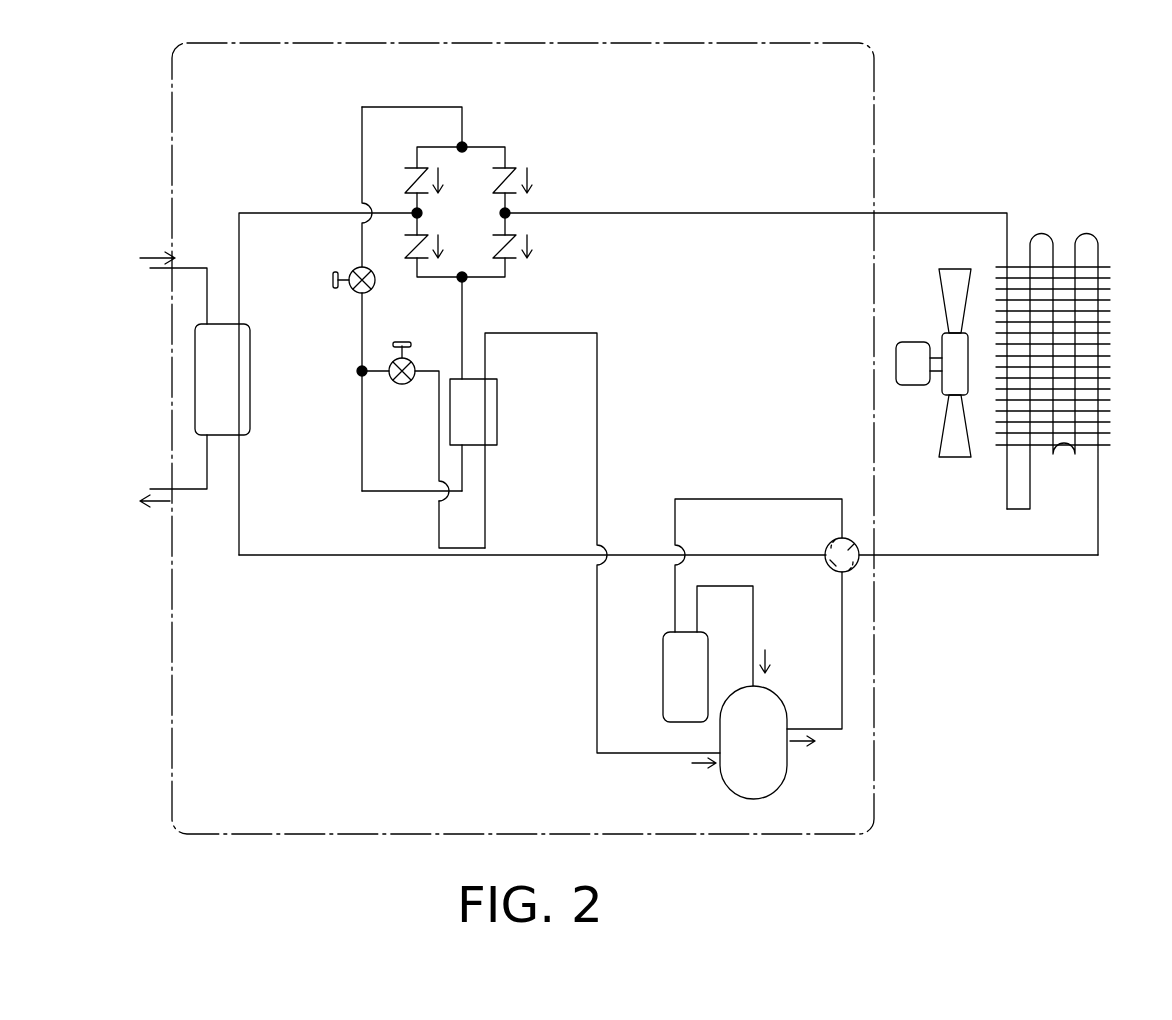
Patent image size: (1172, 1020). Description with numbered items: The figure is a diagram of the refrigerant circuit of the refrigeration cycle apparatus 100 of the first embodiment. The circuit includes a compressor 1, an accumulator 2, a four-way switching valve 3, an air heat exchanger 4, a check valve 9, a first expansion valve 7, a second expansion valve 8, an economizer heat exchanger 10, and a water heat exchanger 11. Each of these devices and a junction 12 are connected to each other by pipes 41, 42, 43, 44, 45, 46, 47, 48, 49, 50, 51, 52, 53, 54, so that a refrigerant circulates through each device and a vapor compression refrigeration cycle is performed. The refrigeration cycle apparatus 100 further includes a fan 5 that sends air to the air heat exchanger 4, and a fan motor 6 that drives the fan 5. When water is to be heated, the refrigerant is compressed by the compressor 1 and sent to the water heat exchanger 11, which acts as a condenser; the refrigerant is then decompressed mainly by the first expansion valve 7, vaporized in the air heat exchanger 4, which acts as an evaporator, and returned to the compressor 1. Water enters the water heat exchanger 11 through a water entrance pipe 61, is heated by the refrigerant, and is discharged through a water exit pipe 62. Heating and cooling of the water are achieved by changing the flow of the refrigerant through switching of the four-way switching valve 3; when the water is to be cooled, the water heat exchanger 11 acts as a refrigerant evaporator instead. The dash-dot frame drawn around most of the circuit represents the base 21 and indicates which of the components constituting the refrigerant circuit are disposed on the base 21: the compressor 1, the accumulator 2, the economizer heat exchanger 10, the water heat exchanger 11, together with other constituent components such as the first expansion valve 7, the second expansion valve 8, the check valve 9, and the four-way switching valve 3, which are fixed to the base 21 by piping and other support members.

The compressor 1 is at (770, 778).
The accumulator 2 is at (673, 673).
The four-way switching valve 3 is at (857, 567).
The air heat exchanger 4 is at (1118, 400).
The fan 5 is at (930, 318).
The fan motor 6 is at (892, 341).
The first expansion valve 7 is at (353, 270).
The second expansion valve 8 is at (413, 362).
The check valve 9 is at (550, 170).
The economizer heat exchanger 10 is at (485, 410).
The water heat exchanger 11 is at (205, 380).
The junction 12 is at (358, 383).
The base 21 is at (628, 44).
The pipe 41 is at (842, 695).
The pipe 42 is at (1058, 557).
The pipe 43 is at (735, 212).
The pipe 44 is at (415, 107).
The pipe 45 is at (362, 322).
The pipe 46 is at (362, 460).
The pipe 47 is at (464, 298).
The pipe 48 is at (280, 213).
The pipe 49 is at (383, 557).
The pipe 50 is at (760, 498).
The pipe 51 is at (753, 600).
The pipe 52 is at (373, 374).
The pipe 53 is at (487, 510).
The pipe 54 is at (597, 362).
The water entrance pipe 61 is at (190, 268).
The water exit pipe 62 is at (187, 492).
The refrigeration cycle apparatus 100 is at (938, 140).